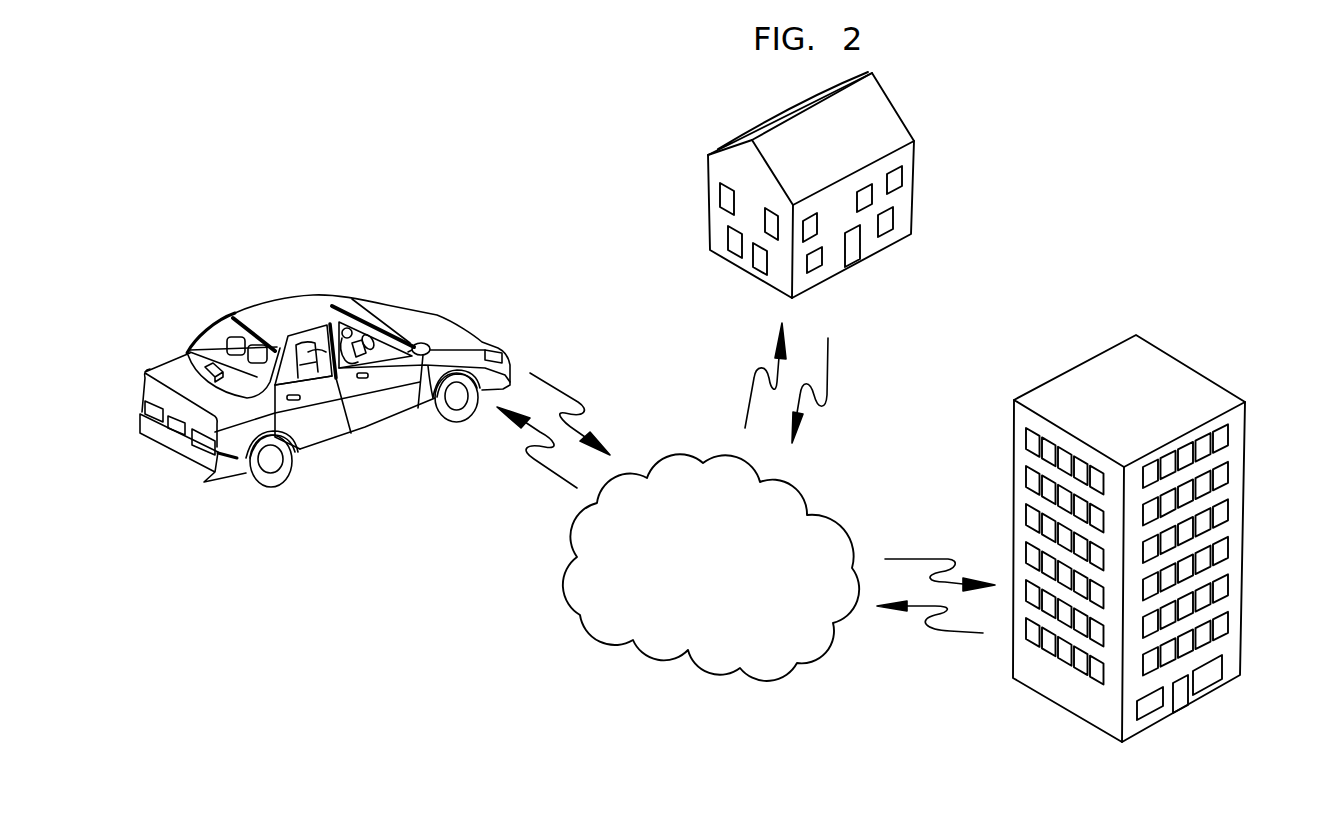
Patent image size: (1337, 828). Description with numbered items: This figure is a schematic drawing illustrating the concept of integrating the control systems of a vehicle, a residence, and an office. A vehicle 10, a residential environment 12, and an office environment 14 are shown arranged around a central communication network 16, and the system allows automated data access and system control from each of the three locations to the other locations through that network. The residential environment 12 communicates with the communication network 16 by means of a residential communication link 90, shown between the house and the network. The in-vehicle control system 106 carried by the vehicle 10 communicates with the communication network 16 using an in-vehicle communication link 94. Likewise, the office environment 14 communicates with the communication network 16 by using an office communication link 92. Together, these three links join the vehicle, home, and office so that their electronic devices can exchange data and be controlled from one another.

The vehicle 10 is at (343, 440).
The in-vehicle control system 106 is at (383, 315).
The residential environment 12 is at (914, 158).
The office environment 14 is at (1240, 588).
The communication network 16 is at (763, 680).
The residential communication link 90 is at (832, 373).
The office communication link 92 is at (930, 553).
The in-vehicle communication link 94 is at (570, 392).